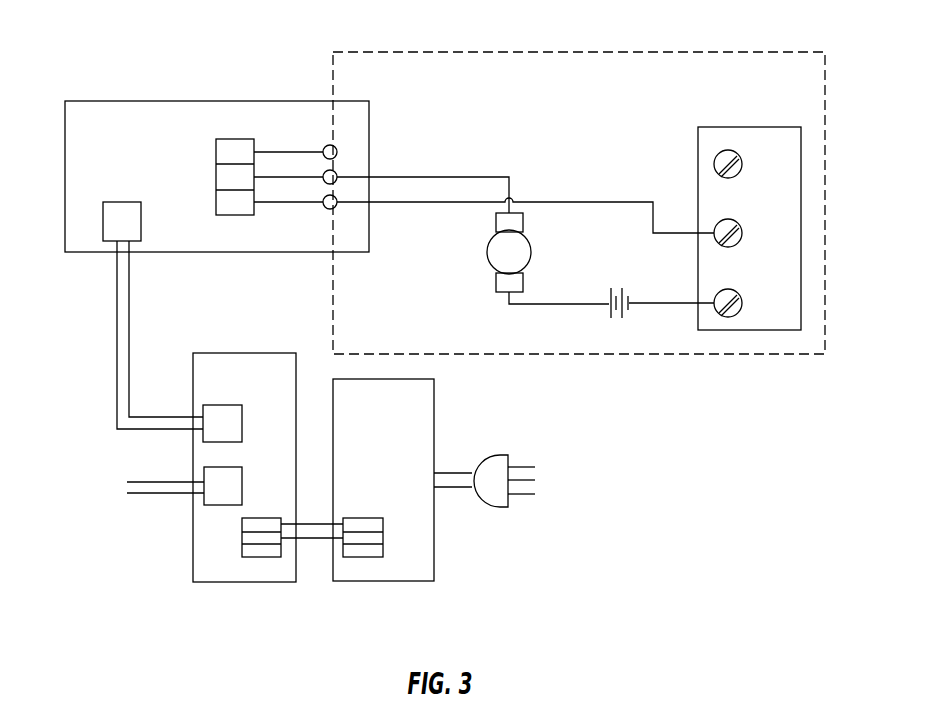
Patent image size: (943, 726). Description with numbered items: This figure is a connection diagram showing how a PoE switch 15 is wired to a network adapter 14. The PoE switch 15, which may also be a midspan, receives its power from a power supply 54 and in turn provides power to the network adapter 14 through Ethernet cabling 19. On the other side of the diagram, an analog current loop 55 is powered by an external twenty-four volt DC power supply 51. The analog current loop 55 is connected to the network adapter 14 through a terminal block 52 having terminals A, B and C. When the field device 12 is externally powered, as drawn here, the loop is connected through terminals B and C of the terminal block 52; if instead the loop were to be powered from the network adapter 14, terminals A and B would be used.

The network adapter 14 is at (155, 113).
The terminal block 52 is at (322, 146).
The field device 12 is at (484, 252).
The Ethernet cabling 19 is at (122, 347).
The PoE switch 15 is at (205, 570).
The power supply 54 is at (348, 568).
The external 24 VDC power supply 51 is at (593, 374).
The analog current loop 55 is at (745, 356).